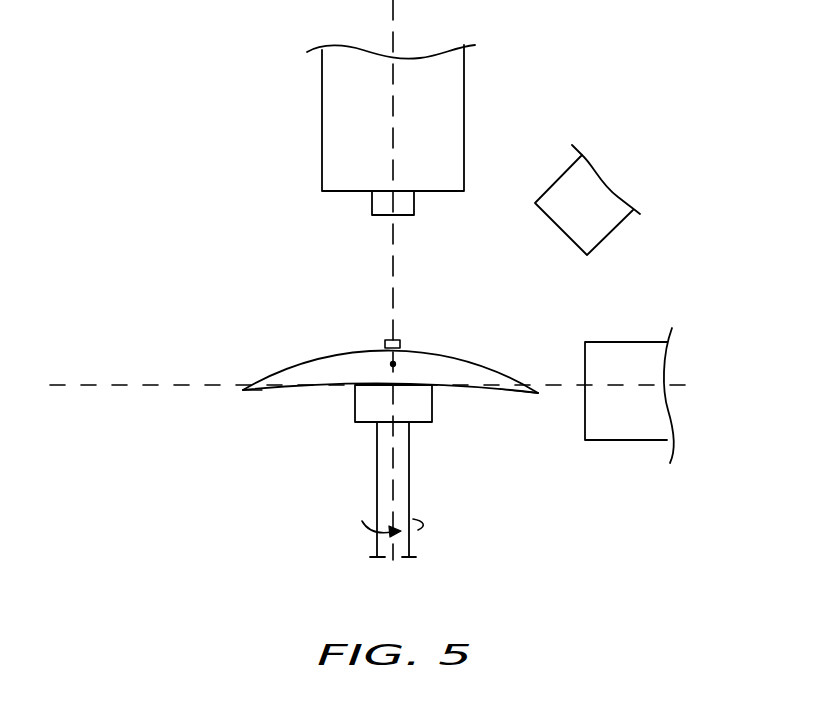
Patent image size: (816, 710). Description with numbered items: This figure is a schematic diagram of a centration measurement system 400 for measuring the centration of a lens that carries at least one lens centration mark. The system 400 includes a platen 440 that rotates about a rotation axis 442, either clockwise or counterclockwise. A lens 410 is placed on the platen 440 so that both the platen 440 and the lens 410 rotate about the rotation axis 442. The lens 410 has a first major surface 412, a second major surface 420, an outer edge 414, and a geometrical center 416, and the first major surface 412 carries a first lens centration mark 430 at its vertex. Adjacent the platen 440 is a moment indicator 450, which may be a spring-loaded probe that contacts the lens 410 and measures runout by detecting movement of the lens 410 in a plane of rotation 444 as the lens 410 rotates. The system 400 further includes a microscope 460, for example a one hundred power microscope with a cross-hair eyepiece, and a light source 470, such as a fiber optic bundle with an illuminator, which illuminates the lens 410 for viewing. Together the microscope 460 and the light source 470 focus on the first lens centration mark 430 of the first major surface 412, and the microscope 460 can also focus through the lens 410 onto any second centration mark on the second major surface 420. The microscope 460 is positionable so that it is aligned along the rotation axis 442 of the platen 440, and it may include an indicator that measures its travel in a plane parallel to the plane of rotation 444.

The centration measurement system 400 is at (368, 280).
The lens 410 is at (360, 380).
The first major surface 412 is at (297, 366).
The outer edge 414 is at (265, 390).
The geometrical center 416 is at (393, 364).
The second major surface 420 is at (492, 388).
The first lens centration mark 430 is at (408, 325).
The platen 440 is at (358, 412).
The rotation axis 442 is at (397, 492).
The plane of rotation 444 is at (122, 385).
The moment indicator 450 is at (622, 432).
The microscope 460 is at (337, 135).
The light source 470 is at (597, 227).